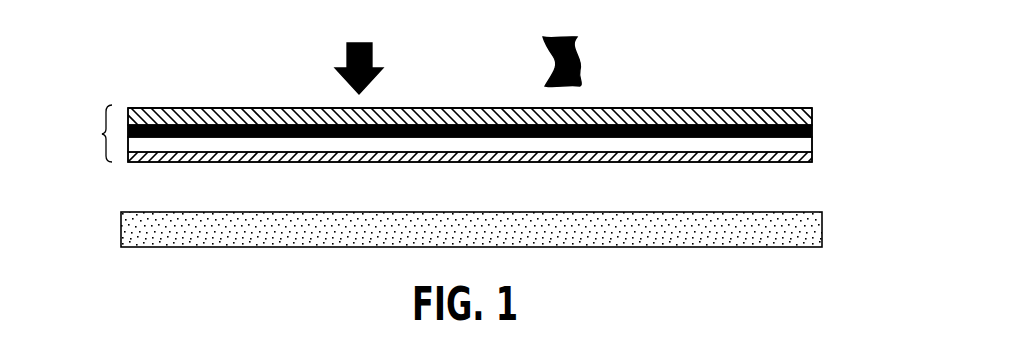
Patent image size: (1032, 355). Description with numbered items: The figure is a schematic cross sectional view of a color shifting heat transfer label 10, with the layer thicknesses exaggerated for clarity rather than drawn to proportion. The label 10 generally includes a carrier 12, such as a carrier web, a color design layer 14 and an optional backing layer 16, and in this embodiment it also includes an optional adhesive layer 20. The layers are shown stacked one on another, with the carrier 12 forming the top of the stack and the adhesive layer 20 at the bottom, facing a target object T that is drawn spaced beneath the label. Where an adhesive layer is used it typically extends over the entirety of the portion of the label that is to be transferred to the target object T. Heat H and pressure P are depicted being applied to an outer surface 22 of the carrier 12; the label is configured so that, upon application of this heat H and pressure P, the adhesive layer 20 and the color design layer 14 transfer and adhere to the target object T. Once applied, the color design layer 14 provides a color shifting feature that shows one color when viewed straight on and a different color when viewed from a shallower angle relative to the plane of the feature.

The color shifting heat transfer label 10 is at (100, 134).
The carrier 12 is at (812, 116).
The color design layer 14 is at (812, 129).
The backing layer 16 is at (810, 146).
The adhesive layer 20 is at (802, 161).
The outer surface 22 is at (677, 108).
The pressure P is at (359, 49).
The heat H is at (562, 45).
The target object T is at (675, 247).